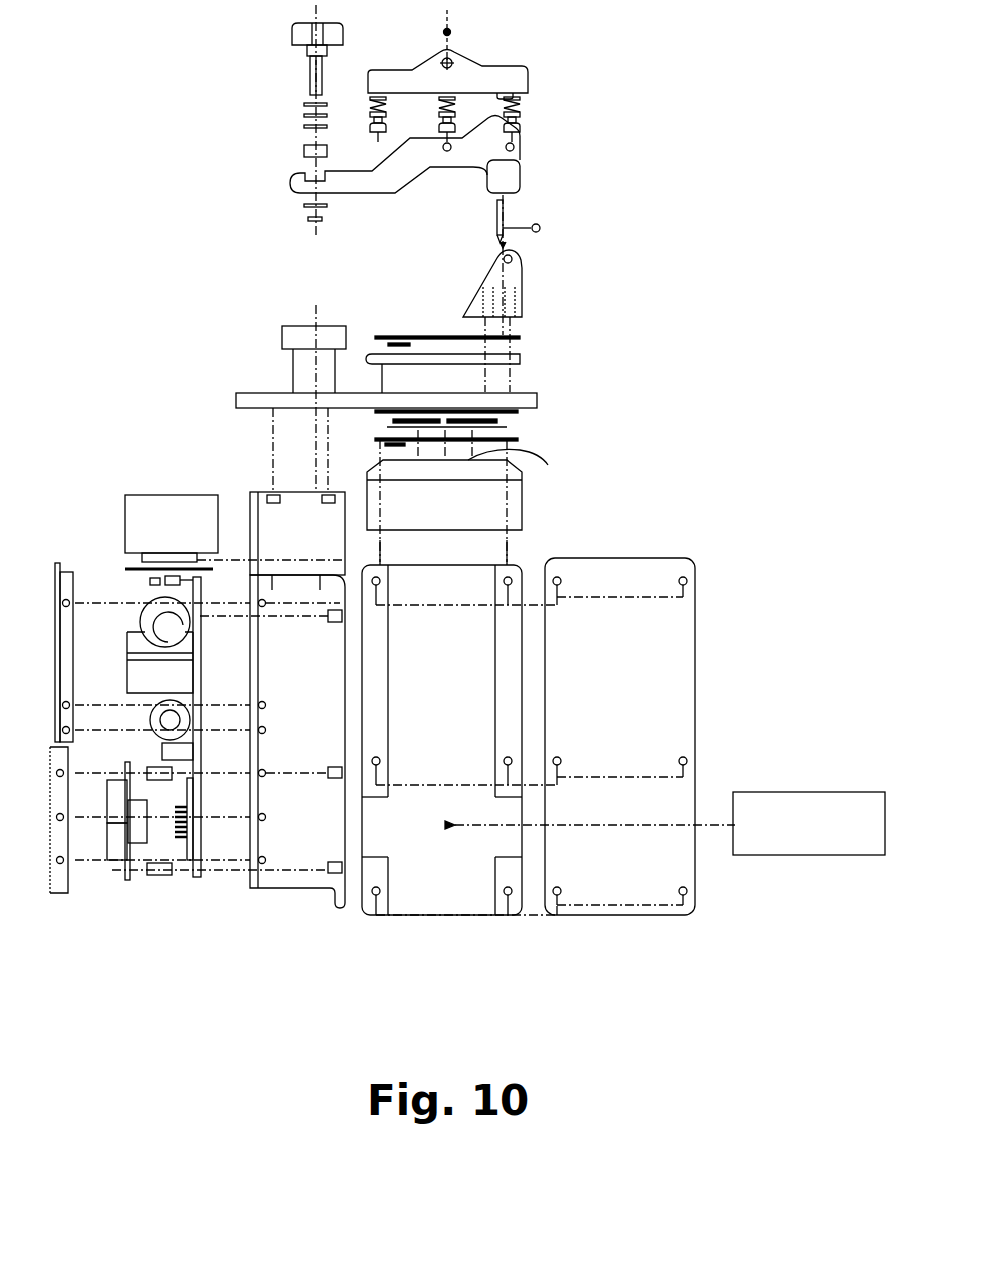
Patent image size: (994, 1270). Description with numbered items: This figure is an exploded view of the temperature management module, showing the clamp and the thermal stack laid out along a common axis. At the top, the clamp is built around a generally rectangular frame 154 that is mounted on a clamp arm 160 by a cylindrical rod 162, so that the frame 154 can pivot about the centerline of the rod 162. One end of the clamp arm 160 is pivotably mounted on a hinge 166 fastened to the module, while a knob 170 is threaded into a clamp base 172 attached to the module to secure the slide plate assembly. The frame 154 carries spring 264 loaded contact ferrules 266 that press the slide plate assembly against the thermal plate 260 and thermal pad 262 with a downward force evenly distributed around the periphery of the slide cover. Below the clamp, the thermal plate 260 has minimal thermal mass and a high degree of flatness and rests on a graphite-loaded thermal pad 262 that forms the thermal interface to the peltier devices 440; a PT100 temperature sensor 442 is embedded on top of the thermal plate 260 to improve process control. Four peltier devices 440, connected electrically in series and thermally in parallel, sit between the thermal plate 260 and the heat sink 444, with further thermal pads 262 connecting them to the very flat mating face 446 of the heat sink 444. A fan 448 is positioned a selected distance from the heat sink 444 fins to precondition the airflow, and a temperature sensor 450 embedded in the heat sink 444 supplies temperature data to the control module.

The rectangular frame 154 is at (530, 78).
The clamp arm 160 is at (292, 185).
The cylindrical rod 162 is at (441, 31).
The hinge 166 is at (524, 292).
The knob 170 is at (305, 50).
The clamp base 172 is at (283, 327).
The thermal plate 260 is at (522, 360).
The thermal pad 262 is at (522, 337).
The spring 264 is at (522, 100).
The contact ferrule 266 is at (522, 130).
The peltier device 440 is at (503, 423).
The PT100 temperature sensor 442 is at (392, 343).
The heat sink 444 is at (523, 517).
The mating face 446 is at (512, 440).
The fan 448 is at (810, 806).
The temperature sensor 450 is at (383, 445).